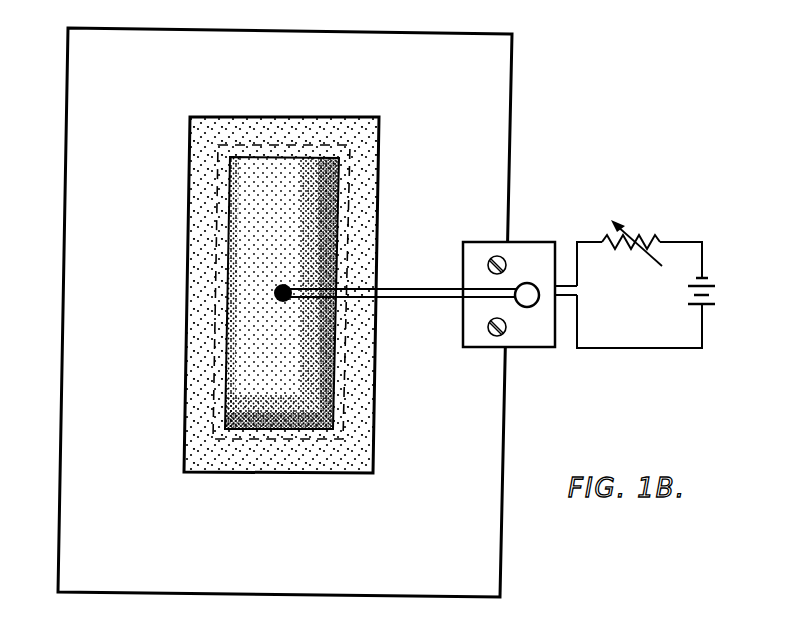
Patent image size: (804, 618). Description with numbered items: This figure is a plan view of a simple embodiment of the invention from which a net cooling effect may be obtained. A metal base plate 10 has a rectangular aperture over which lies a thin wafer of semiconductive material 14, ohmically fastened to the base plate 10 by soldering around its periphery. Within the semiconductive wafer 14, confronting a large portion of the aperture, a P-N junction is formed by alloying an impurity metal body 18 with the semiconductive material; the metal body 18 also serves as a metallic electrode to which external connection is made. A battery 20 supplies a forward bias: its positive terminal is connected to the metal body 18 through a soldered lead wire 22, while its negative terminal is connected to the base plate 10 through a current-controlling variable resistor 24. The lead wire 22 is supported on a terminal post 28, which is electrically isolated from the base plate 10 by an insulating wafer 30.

The metal base plate 10 is at (63, 268).
The wafer of semiconductive material 14 is at (248, 117).
The impurity metal body 18 is at (262, 375).
The battery 20 is at (751, 308).
The lead wire 22 is at (405, 288).
The variable resistor 24 is at (660, 218).
The terminal post 28 is at (526, 308).
The insulating wafer 30 is at (529, 242).